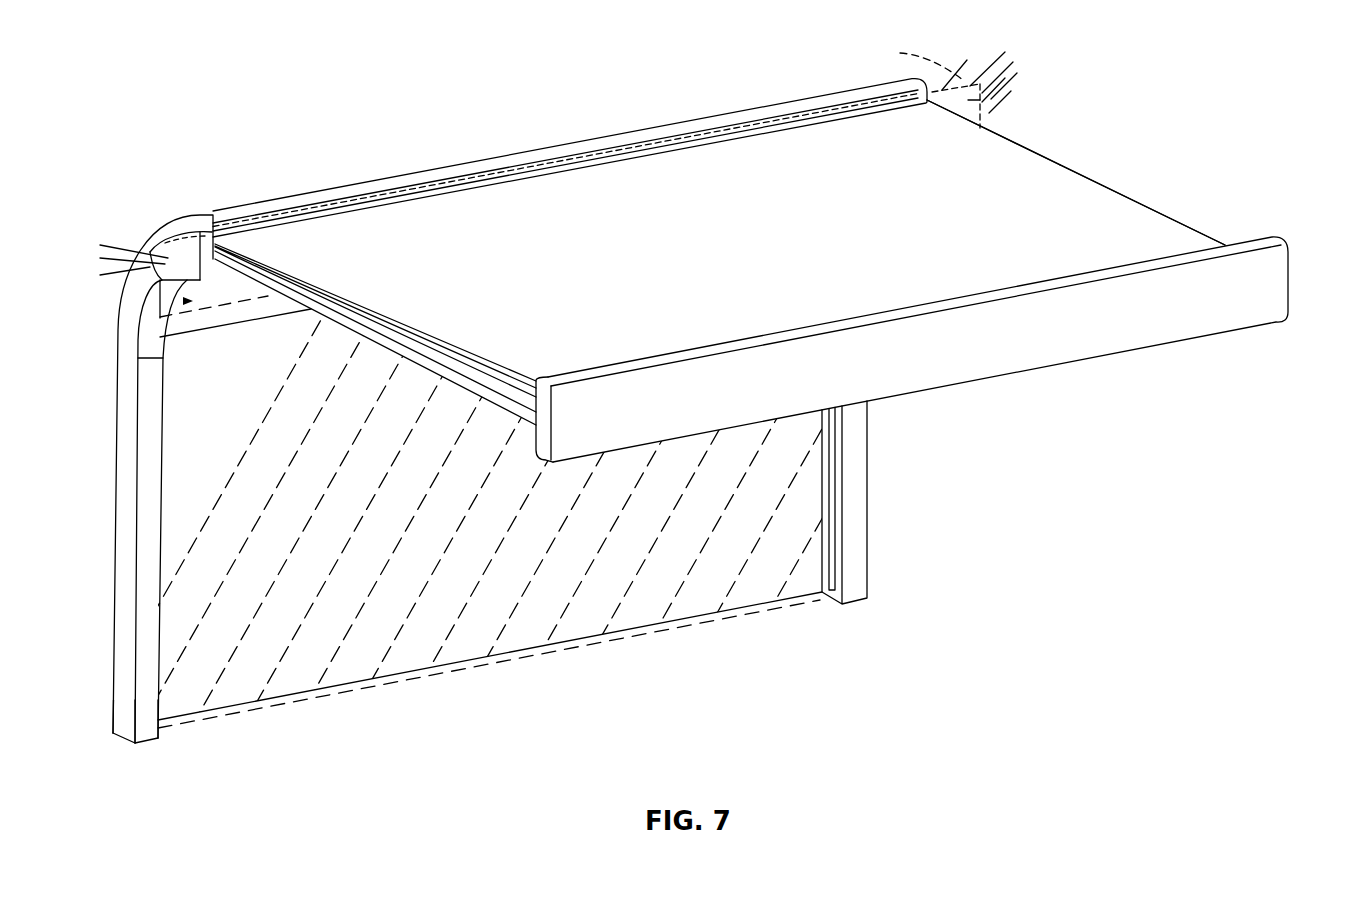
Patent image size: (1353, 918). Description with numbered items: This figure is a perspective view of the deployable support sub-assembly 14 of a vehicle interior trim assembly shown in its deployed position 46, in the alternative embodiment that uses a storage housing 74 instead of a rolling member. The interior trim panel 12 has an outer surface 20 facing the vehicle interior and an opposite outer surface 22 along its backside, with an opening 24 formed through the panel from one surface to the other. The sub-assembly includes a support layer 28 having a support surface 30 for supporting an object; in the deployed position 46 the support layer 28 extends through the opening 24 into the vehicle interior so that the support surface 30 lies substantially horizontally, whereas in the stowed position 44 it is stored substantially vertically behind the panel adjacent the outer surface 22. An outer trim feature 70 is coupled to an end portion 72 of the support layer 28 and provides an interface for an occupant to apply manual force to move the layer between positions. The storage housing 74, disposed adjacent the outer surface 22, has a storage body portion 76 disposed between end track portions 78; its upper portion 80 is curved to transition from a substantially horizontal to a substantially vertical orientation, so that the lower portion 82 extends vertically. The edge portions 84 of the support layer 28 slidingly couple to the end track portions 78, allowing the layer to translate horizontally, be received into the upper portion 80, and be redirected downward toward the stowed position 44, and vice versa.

The interior trim panel 12 is at (168, 258).
The deployable support sub-assembly 14 is at (1103, 90).
The outer surface 20 is at (1015, 62).
The outer surface 22 is at (913, 60).
The opening 24 is at (178, 280).
The support layer 28 is at (1106, 202).
The support surface 30 is at (1062, 174).
The stowed position 44 is at (635, 633).
The deployed position 46 is at (1198, 172).
The outer trim feature 70 is at (1278, 288).
The end portion 72 is at (1186, 223).
The storage housing 74 is at (134, 562).
The storage body portion 76 is at (493, 158).
The end track portions 78 is at (167, 257).
The upper portion 80 is at (651, 125).
The lower portion 82 is at (125, 695).
The edge portions 84 is at (380, 346).